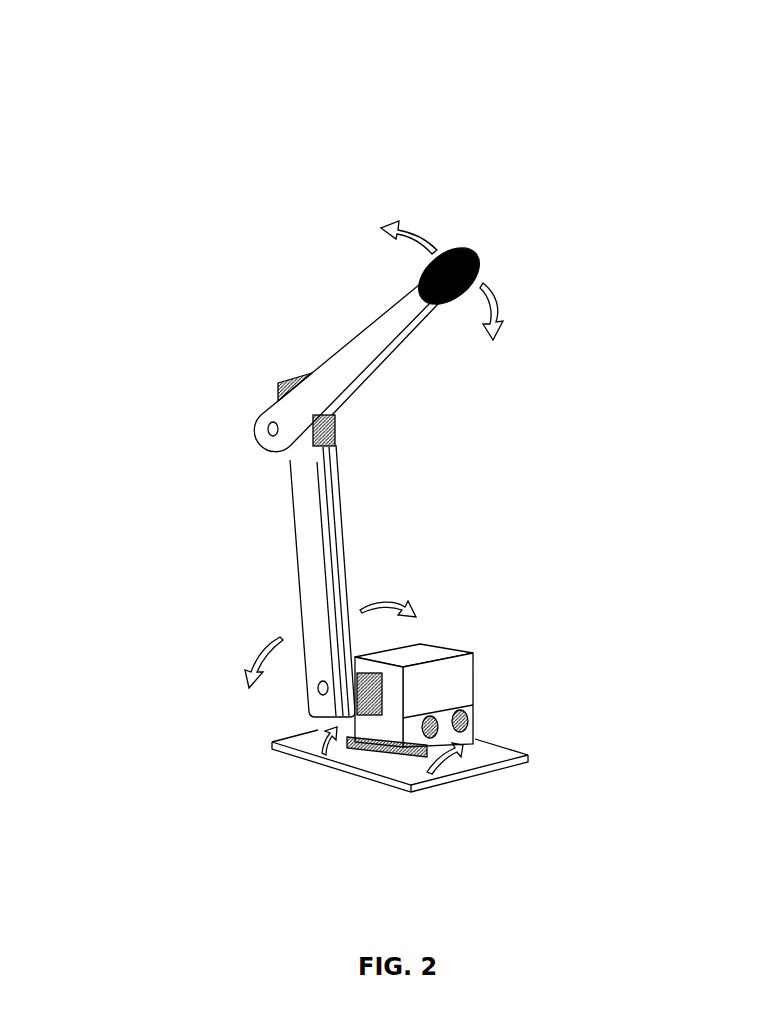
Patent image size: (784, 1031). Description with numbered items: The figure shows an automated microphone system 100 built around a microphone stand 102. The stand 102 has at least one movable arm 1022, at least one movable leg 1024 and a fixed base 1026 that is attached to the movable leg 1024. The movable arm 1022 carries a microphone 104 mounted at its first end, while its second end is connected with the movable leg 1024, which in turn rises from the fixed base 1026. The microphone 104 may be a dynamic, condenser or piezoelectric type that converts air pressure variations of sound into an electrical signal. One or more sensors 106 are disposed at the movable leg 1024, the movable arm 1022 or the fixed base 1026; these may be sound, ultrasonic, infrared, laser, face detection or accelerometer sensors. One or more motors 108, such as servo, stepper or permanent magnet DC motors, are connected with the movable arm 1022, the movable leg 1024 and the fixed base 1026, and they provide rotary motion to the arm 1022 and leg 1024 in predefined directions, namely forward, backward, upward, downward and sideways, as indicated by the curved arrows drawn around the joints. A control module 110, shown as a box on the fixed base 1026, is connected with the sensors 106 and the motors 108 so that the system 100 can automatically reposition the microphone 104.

The automated microphone system 100 is at (305, 107).
The microphone stand 102 is at (142, 270).
The microphone 104 is at (463, 252).
The sensors 106 is at (329, 420).
The motors 108 is at (279, 384).
The control module 110 is at (450, 683).
The movable arm 1022 is at (357, 337).
The movable leg 1024 is at (310, 582).
The fixed base 1026 is at (273, 750).